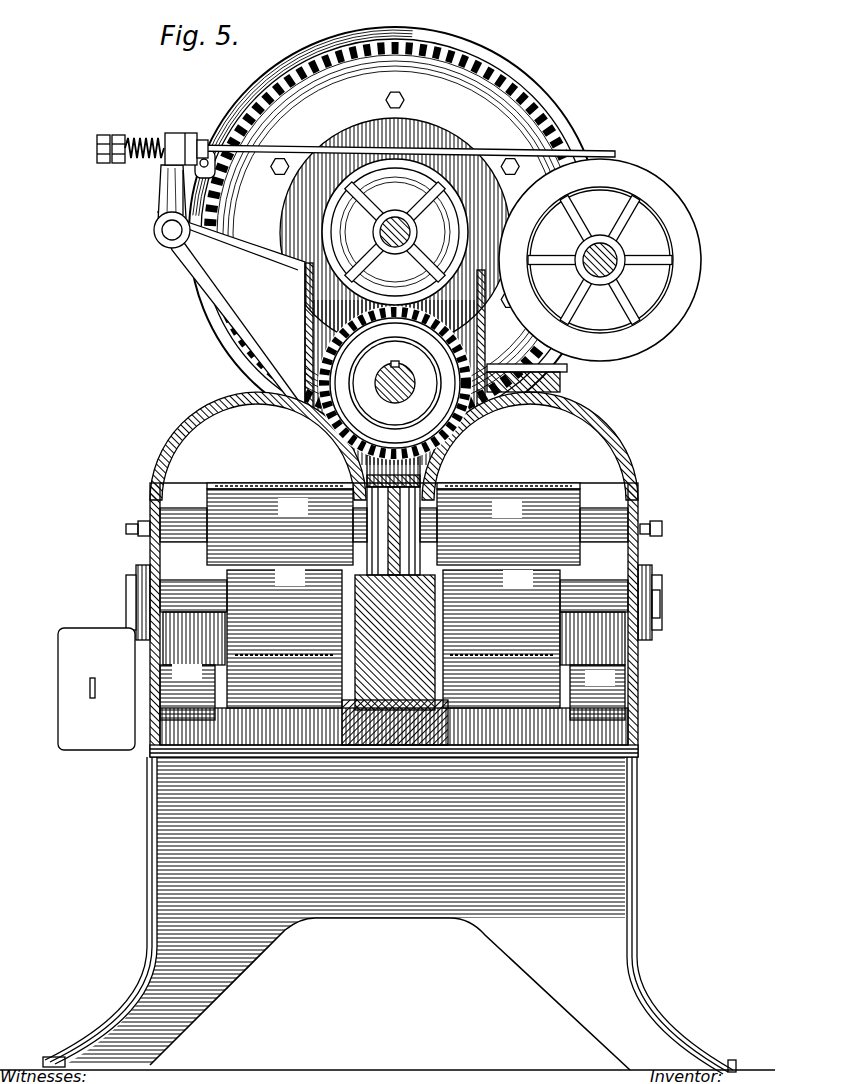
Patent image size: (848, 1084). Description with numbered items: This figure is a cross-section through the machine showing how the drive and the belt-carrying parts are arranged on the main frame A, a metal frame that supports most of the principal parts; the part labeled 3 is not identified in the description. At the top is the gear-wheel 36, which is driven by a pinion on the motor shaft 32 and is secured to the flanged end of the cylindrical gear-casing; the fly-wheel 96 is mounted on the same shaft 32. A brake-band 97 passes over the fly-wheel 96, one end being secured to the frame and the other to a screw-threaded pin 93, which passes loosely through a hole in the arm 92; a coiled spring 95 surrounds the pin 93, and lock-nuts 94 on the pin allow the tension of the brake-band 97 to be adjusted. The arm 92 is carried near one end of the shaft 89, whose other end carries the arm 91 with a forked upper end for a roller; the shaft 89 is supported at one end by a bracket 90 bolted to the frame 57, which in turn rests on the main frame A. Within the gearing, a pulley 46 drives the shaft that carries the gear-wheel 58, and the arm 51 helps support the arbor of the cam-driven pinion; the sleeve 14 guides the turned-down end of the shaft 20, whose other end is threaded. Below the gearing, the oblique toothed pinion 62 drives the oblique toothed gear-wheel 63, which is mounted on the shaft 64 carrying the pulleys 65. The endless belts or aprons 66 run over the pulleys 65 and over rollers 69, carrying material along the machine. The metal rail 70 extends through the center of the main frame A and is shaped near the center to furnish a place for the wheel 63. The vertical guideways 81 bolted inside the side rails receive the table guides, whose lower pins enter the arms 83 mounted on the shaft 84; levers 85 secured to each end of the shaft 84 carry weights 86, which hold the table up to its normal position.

The ring gear 3 is at (395, 257).
The gear-wheel 36 is at (338, 62).
The brake-band 97 is at (402, 261).
The sleeve 14 is at (412, 232).
The pulley 46 is at (414, 247).
The gear-wheel 58 is at (395, 232).
The frame 57 is at (395, 378).
The arm 51 is at (412, 362).
The shaft 20 is at (413, 391).
The shaft 32 is at (615, 276).
The fly-wheel 96 is at (600, 260).
The screw-threaded pin 93 is at (89, 151).
The lock-nuts 94 is at (118, 136).
The coiled spring 95 is at (155, 132).
The arm 92 is at (160, 190).
The arm 91 is at (162, 200).
The shaft 89 is at (162, 233).
The bracket 90 is at (231, 316).
The endless belts or aprons 66 is at (393, 476).
The rollers 69 is at (393, 527).
The metal rail 70 is at (423, 492).
The vertical guideways 81 is at (622, 556).
The pulleys 65 is at (393, 638).
The oblique toothed pinion 62 is at (470, 588).
The shaft 64 is at (656, 600).
The frame A is at (653, 620).
The arm or lever 85 is at (96, 688).
The weight 86 is at (96, 689).
The arm 83 is at (392, 692).
The oblique toothed gear-wheel 63 is at (360, 757).
The shaft 84 is at (430, 757).